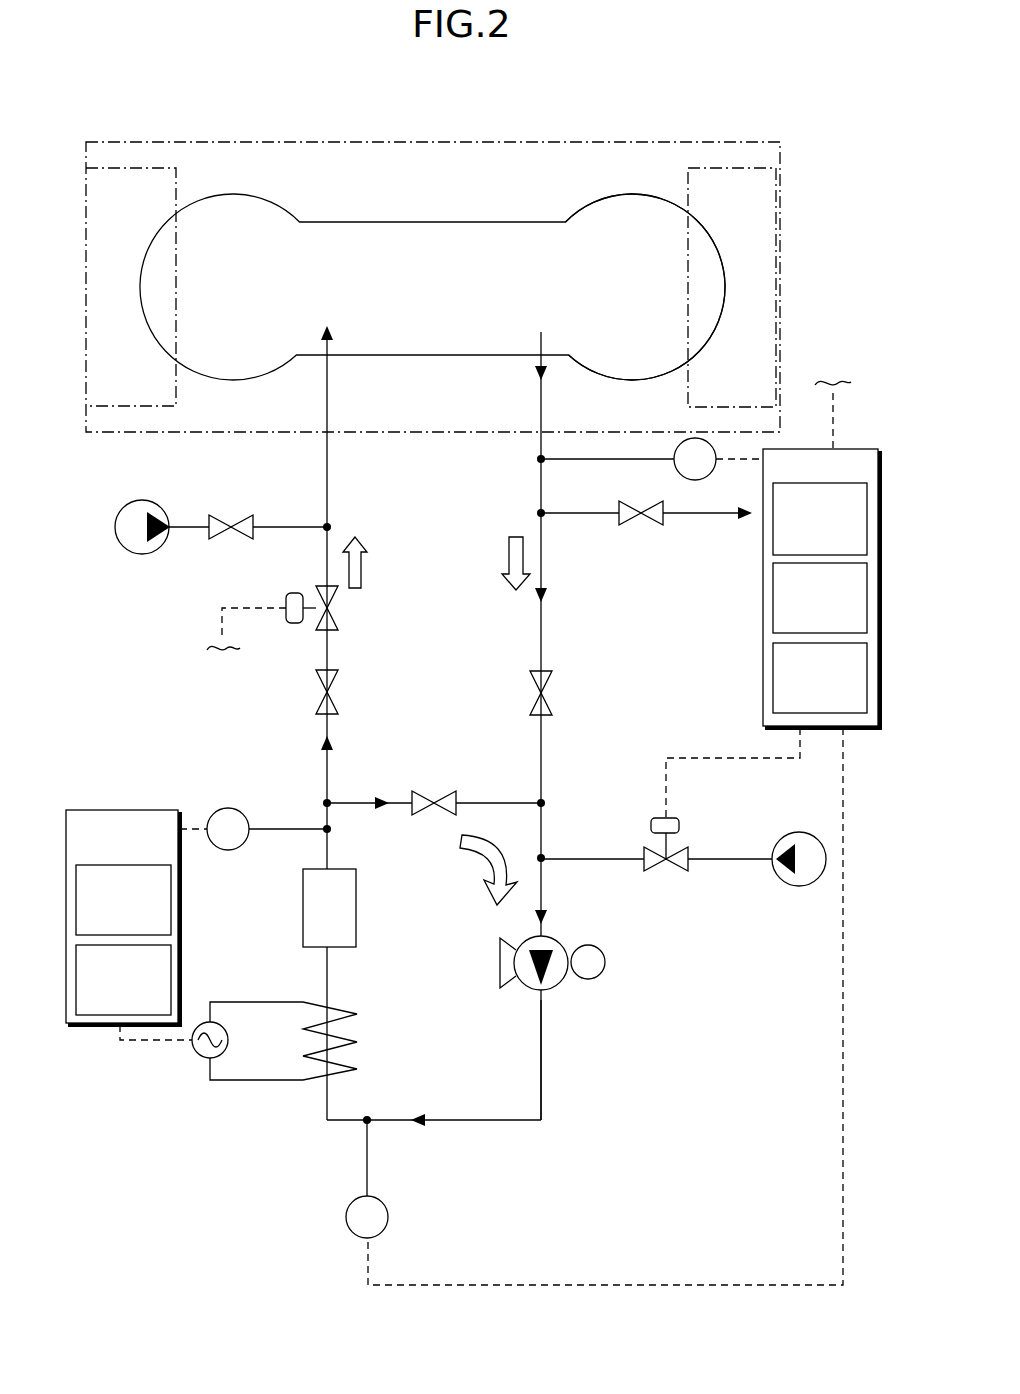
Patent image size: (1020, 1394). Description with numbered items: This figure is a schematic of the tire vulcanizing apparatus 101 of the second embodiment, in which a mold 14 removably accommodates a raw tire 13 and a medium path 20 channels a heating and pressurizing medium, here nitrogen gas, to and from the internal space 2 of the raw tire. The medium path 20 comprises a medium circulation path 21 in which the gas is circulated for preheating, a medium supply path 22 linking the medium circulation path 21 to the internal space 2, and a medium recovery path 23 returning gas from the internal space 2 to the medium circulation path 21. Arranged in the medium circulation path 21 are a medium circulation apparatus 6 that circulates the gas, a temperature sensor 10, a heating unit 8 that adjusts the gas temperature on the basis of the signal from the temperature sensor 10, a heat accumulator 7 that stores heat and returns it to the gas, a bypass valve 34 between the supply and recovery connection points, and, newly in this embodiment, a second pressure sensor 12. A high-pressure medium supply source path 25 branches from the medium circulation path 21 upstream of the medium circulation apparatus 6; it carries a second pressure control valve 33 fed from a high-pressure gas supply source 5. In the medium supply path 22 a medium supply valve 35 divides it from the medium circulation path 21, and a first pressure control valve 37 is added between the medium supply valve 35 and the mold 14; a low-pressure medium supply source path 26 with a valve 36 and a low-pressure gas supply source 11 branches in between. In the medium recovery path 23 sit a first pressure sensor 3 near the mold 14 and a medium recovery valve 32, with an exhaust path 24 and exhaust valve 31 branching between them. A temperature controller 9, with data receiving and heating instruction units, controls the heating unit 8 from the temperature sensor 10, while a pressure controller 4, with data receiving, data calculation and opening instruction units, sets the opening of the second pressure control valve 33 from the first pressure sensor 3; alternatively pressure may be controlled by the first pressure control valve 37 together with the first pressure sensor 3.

The tire vulcanizing apparatus 101 is at (791, 70).
The mold 14 is at (267, 142).
The internal space of the raw tire 2 is at (432, 226).
The raw tire 13 is at (629, 193).
The medium supply path 22 is at (327, 492).
The medium recovery path 23 is at (542, 550).
The low-pressure gas supply source 11 is at (128, 552).
The low-pressure medium supply source path 26 is at (300, 530).
The valve 36 is at (245, 535).
The first pressure control valve 37 is at (323, 630).
The medium supply valve 35 is at (333, 685).
The first pressure sensor 3 is at (677, 469).
The exhaust path 24 is at (695, 516).
The exhaust valve 31 is at (640, 520).
The medium recovery valve 32 is at (547, 685).
The pressure controller 4 is at (847, 448).
The temperature controller 9 is at (118, 808).
The temperature sensor 10 is at (222, 808).
The heat accumulator 7 is at (303, 902).
The heating unit 8 is at (202, 1058).
The second pressure sensor 12 is at (345, 1218).
The bypass valve 34 is at (427, 801).
The medium circulation path 21 is at (503, 802).
The medium path 20 is at (562, 1067).
The high-pressure medium supply source path 25 is at (578, 858).
The second pressure control valve 33 is at (682, 850).
The high-pressure gas supply source 5 is at (802, 888).
The medium circulation apparatus 6 is at (562, 978).